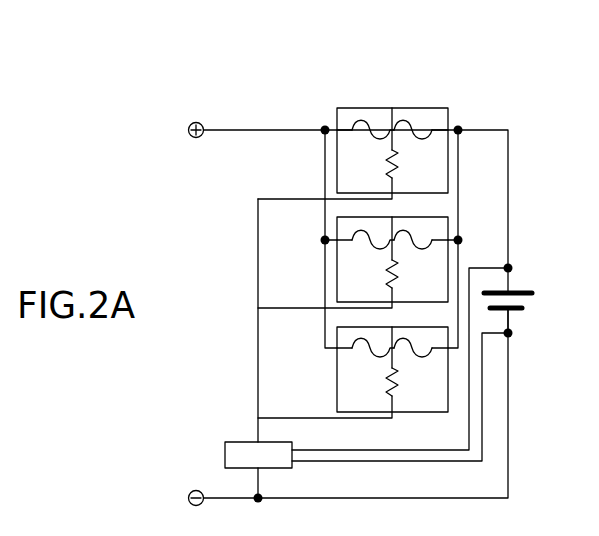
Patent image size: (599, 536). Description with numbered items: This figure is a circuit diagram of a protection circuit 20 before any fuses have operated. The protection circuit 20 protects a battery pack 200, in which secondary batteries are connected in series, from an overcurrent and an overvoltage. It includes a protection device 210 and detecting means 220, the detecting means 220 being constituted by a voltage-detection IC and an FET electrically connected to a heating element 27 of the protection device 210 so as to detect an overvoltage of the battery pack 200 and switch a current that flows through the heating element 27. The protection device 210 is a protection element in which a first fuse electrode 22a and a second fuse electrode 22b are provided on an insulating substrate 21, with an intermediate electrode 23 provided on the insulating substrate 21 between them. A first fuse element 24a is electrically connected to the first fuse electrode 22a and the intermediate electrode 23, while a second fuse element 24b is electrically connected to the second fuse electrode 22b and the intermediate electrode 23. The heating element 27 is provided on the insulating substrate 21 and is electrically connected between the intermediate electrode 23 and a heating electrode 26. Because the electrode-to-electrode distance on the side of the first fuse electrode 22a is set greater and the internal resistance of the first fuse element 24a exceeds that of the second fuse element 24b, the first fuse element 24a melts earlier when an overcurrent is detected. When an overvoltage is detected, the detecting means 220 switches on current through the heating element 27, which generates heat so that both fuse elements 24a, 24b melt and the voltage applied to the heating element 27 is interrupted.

The protection circuit 20 is at (296, 124).
The insulating substrate 21 is at (340, 154).
The first fuse electrode 22a is at (446, 128).
The second fuse electrode 22b is at (346, 128).
The intermediate electrode 23 is at (392, 108).
The first fuse element 24a is at (428, 126).
The second fuse element 24b is at (377, 126).
The heating electrode 26 is at (393, 185).
The heating element 27 is at (400, 160).
The battery pack 200 is at (528, 301).
The protection device 210 is at (407, 222).
The detecting means 220 is at (366, 368).